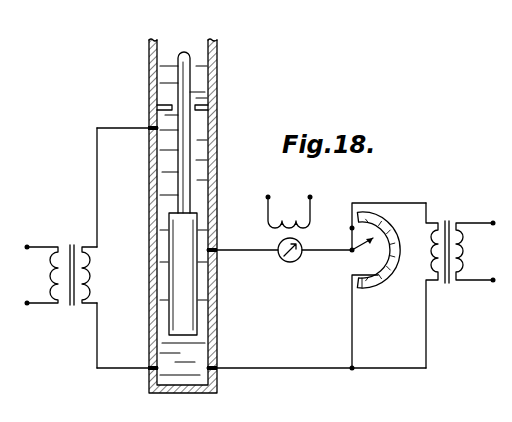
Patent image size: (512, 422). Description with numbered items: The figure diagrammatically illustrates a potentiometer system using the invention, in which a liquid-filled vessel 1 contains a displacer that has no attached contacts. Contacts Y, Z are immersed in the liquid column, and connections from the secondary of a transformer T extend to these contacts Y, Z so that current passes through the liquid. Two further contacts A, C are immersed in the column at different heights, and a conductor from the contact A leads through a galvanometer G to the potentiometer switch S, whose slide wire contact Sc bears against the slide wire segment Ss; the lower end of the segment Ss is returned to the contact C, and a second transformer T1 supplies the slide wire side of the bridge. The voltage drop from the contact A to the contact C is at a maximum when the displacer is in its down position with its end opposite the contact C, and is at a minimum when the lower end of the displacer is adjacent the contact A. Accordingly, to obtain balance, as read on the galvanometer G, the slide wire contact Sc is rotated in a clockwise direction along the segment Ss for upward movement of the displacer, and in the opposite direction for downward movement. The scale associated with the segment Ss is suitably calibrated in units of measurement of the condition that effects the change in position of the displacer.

The glass vessel / tube 1 is at (218, 176).
The contact Y is at (150, 136).
The contact Z is at (152, 372).
The contact A is at (219, 254).
The contact C is at (219, 365).
The transformer T is at (75, 244).
The transformer T1 is at (449, 220).
The galvanometer G is at (289, 263).
The switch S is at (372, 262).
The slide wire contact Sc is at (350, 230).
The switch segment Ss is at (388, 287).